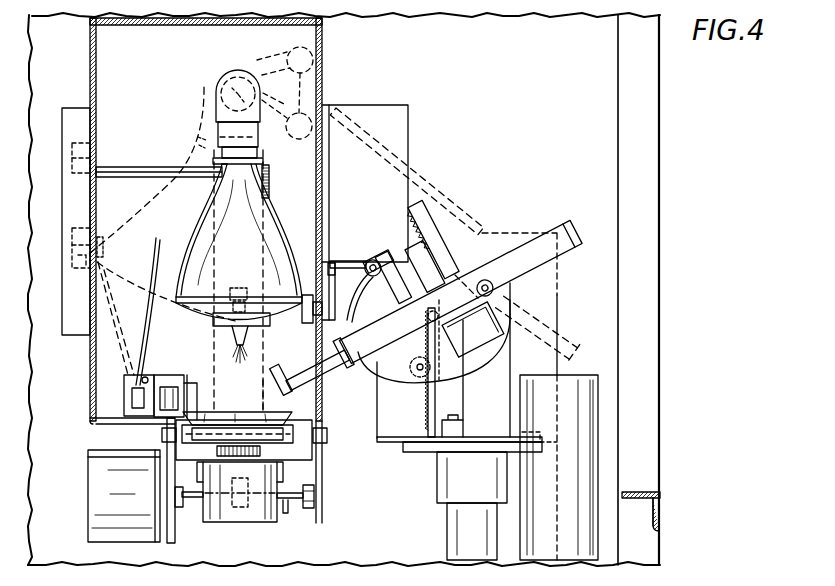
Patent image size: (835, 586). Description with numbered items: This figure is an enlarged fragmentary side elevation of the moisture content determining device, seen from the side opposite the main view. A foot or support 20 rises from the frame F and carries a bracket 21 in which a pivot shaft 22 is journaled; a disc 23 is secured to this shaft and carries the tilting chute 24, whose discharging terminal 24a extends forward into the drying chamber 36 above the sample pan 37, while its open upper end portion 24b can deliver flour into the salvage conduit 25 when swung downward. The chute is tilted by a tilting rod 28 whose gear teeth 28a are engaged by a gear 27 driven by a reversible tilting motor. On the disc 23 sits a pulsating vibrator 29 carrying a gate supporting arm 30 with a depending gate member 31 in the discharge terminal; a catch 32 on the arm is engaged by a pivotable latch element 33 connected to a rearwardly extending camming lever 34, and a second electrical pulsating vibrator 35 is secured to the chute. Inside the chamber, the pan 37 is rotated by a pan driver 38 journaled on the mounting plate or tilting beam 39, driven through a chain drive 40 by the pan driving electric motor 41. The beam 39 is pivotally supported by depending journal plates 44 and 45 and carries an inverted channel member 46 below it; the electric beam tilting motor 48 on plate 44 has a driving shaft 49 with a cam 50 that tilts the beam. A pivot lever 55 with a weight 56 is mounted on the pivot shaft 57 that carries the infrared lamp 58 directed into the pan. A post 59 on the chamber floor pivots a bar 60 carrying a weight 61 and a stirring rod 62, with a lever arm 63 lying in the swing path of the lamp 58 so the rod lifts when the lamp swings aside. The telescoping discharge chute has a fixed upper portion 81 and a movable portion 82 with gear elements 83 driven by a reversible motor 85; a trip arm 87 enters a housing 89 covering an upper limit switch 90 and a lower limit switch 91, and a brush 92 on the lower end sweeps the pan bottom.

The frame F is at (657, 313).
The foot or support 20 is at (448, 539).
The bracket 21 is at (557, 302).
The pivot shaft 22 is at (494, 288).
The disc 23 is at (382, 375).
The tilting chute 24 is at (428, 186).
The discharging terminal 24a is at (266, 387).
The upper end portion 24b is at (548, 227).
The salvage conduit 25 is at (592, 412).
The gear 27 is at (416, 360).
The tilting rod 28 is at (437, 397).
The gear teeth 28a is at (428, 399).
The pulsating vibrator 29 is at (423, 268).
The gate supporting arm 30 is at (297, 361).
The gate member 31 is at (293, 385).
The catch 32 is at (392, 290).
The latch element 33 is at (354, 298).
The camming lever 34 is at (376, 260).
The electrical pulsating vibrator 35 is at (473, 331).
The drying chamber 36 is at (88, 60).
The sample pan 37 is at (259, 413).
The pan driver 38 is at (268, 433).
The mounting plate or tilting beam 39 is at (312, 460).
The chain drive 40 is at (217, 451).
The pan driving electric motor 41 is at (263, 520).
The journal plate 44 is at (175, 518).
The journal plate 45 is at (318, 507).
The inverted channel member 46 is at (281, 470).
The electric beam tilting motor 48 is at (102, 490).
The driving shaft 49 is at (287, 505).
The cam 50 is at (237, 522).
The pivot lever 55 is at (285, 93).
The weight 56 is at (267, 62).
The pivot shaft 57 is at (214, 86).
The infrared lamp 58 is at (233, 242).
The post 59 is at (134, 393).
The bar 60 is at (174, 378).
The weight 61 is at (163, 402).
The stirring rod 62 is at (200, 382).
The lever arm 63 is at (146, 282).
The fixed upper portion 81 is at (263, 155).
The movable portion 82 is at (214, 190).
The gear elements 83 is at (270, 188).
The reversible motor 85 is at (348, 262).
The trip arm 87 is at (150, 174).
The housing 89 is at (72, 203).
The upper limit switch 90 is at (72, 157).
The lower limit switch 91 is at (72, 243).
The brush 92 is at (231, 335).